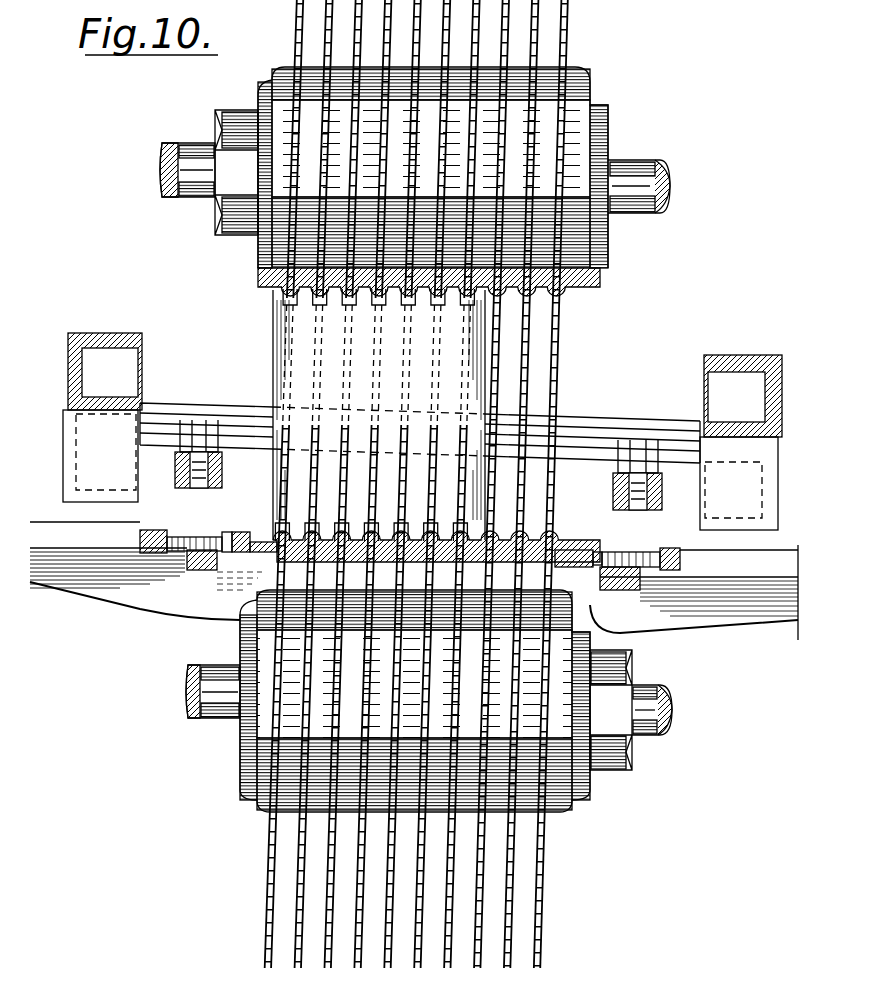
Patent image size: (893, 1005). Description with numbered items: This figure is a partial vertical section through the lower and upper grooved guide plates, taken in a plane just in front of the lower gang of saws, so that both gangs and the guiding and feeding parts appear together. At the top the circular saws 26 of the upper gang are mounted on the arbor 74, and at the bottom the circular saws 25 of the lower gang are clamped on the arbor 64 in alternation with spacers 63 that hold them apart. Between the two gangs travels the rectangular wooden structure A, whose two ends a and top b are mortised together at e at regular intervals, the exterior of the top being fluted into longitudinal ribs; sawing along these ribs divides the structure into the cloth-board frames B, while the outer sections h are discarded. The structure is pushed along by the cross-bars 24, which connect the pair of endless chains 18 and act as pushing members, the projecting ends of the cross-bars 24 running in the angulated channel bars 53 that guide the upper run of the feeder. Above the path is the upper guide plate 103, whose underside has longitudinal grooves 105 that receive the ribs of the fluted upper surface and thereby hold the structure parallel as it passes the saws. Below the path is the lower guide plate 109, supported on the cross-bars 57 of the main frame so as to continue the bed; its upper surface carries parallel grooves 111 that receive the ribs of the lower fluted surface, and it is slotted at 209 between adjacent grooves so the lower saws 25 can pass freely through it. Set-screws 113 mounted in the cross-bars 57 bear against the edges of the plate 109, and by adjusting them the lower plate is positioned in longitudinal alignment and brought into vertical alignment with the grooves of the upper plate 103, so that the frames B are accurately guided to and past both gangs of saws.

The circular saws of upper gang 26 is at (490, 46).
The circular saws of lower gang 25 is at (453, 898).
The arbor 74 is at (638, 163).
The upper guide plate 103 is at (598, 290).
The longitudinal grooves 105 is at (520, 304).
The mortise e is at (263, 283).
The rectangular wooden structure A is at (274, 342).
The outer sections h is at (274, 388).
The top b is at (412, 300).
The ends a is at (379, 415).
The cloth-board frame B is at (360, 503).
The angulated channel bars 53 is at (422, 431).
The cross-bars 24 is at (172, 404).
The endless chains 18 is at (222, 484).
The slots 209 is at (558, 549).
The parallel grooves 111 is at (263, 540).
The set-screws 113 is at (187, 553).
The lower guide plate 109 is at (243, 552).
The cross-bars 57 is at (762, 606).
The arbor 64 is at (186, 692).
The spacers 63 is at (330, 728).